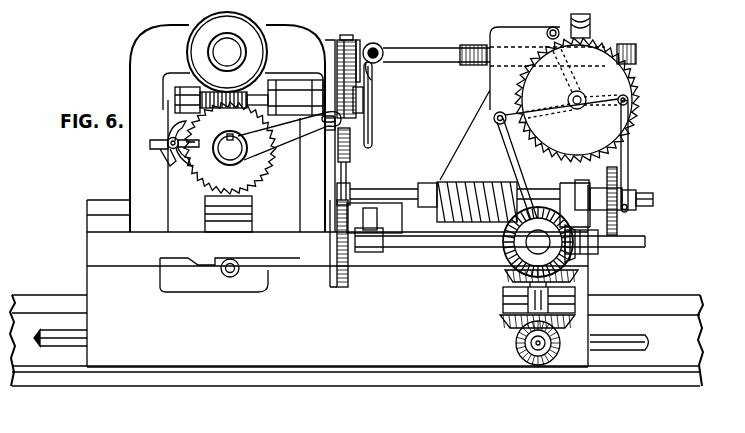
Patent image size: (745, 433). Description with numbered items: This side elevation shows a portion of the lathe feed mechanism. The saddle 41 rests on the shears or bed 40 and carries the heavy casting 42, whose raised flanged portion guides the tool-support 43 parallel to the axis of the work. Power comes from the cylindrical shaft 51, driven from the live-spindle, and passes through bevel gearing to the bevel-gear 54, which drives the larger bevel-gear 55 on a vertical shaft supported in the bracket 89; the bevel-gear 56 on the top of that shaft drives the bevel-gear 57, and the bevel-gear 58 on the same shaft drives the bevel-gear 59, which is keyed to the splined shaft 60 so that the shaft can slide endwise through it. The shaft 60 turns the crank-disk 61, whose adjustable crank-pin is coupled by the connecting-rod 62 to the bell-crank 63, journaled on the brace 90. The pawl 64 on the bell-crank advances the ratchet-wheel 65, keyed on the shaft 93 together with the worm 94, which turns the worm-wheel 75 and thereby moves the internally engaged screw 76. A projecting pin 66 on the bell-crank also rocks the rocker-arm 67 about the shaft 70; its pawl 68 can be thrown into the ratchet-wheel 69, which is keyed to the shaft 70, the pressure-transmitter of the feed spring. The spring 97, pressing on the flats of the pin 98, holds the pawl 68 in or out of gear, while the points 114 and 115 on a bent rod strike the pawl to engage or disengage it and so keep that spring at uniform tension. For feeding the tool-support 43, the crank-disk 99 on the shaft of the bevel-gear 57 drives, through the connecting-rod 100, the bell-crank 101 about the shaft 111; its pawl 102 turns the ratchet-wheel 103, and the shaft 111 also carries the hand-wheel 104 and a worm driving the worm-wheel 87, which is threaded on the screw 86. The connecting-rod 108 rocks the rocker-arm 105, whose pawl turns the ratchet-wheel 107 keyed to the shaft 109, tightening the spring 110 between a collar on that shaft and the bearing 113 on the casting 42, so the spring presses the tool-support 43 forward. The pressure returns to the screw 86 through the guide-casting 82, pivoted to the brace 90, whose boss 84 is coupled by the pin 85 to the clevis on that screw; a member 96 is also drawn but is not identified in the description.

The shears or bed 40 is at (267, 388).
The saddle 41 is at (337, 276).
The heavy casting 42 is at (337, 235).
The tool-support 43 is at (216, 214).
The cylindrical shaft 51 is at (341, 330).
The bevel-gear 54 is at (556, 352).
The bevel-gear 55 is at (503, 325).
The bevel-gear 56 is at (579, 277).
The bevel-gear 57 is at (508, 274).
The bevel-gear 58 is at (505, 249).
The bevel-gear 59 is at (576, 260).
The shaft 60 is at (626, 246).
The crank-disk 61 is at (350, 280).
The connecting-rod 62 is at (330, 218).
The bell-crank 63 is at (327, 68).
The pawl 64 is at (346, 40).
The ratchet-wheel 65 is at (346, 162).
The projecting pin 66 is at (332, 130).
The rocker-arm 67 is at (289, 136).
The pawl 68 is at (183, 161).
The ratchet-wheel 69 is at (236, 138).
The shaft 70 is at (230, 148).
The worm-wheel 75 is at (227, 52).
The screw 76 is at (227, 52).
The guide-casting 82 is at (358, 40).
The boss 84 is at (376, 44).
The pin 85 is at (376, 64).
The screw 86 is at (430, 48).
The worm-wheel 87 is at (592, 27).
The bracket 89 is at (503, 300).
The brace 90 is at (227, 128).
The shaft 93 is at (262, 84).
The worm 94 is at (212, 93).
The bar 96 is at (372, 118).
The spring 97 is at (190, 140).
The pin 98 is at (167, 143).
The crank-disk 99 is at (578, 207).
The connecting-rod 100 is at (512, 168).
The bell-crank 101 is at (502, 112).
The pawl 102 is at (550, 28).
The ratchet-wheel 103 is at (636, 99).
The hand-wheel 104 is at (571, 101).
The rocker-arm 105 is at (634, 211).
The ratchet-wheel 107 is at (607, 177).
The connecting-rod 108 is at (629, 162).
The shaft 109 is at (664, 198).
The spring 110 is at (466, 182).
The shaft 111 is at (582, 105).
The bearing 113 is at (573, 195).
The point 114 is at (162, 158).
The point 115 is at (170, 128).